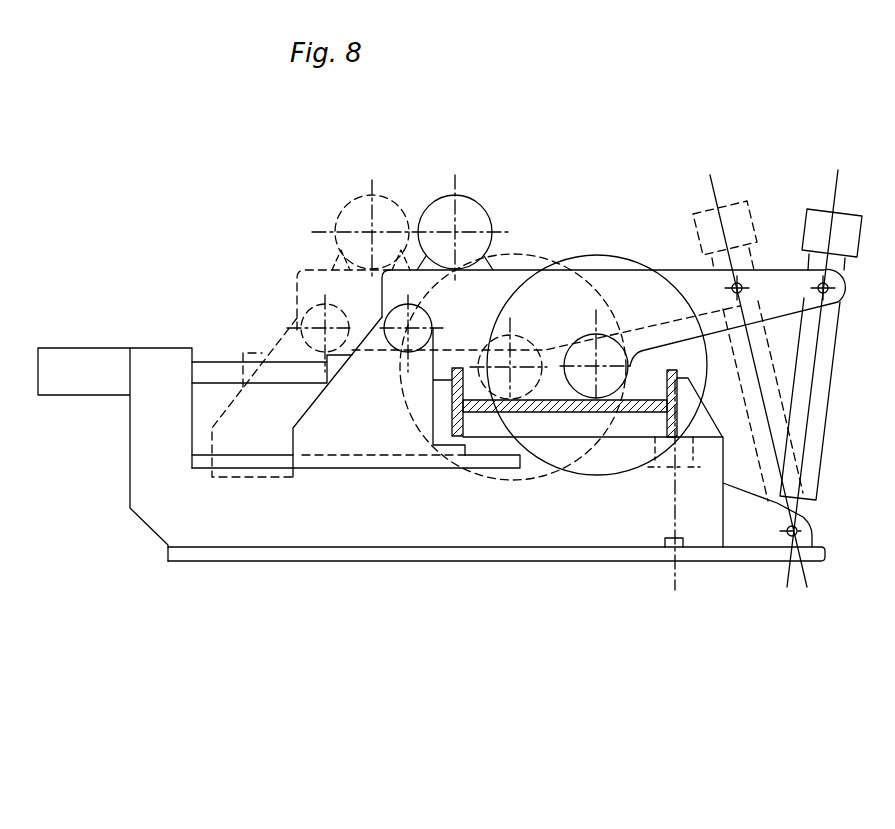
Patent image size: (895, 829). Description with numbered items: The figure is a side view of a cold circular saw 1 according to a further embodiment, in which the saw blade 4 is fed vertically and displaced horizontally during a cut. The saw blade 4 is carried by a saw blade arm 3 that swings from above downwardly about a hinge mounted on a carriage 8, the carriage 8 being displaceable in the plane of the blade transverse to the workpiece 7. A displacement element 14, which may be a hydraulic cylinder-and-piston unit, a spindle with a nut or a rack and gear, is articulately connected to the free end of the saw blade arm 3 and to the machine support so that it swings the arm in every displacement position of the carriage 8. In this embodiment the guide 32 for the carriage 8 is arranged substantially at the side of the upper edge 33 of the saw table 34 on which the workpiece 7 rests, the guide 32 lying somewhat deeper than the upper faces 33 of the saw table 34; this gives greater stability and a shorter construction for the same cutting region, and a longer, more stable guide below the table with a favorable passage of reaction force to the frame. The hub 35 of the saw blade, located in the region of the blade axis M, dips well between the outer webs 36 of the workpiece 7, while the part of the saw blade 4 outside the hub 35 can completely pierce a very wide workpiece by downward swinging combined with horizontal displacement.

The cold circular saw 1 is at (585, 134).
The saw blade arm 3 is at (683, 282).
The saw blade 4 is at (523, 262).
The workpiece 7 is at (632, 405).
The carriage 8 is at (320, 423).
The displacement element 14 is at (838, 352).
The guide 32 is at (497, 462).
The upper edge 33 is at (490, 435).
The saw table 34 is at (615, 504).
The hub 35 is at (505, 318).
The outer webs 36 is at (455, 390).
The saw blade axis M is at (594, 363).